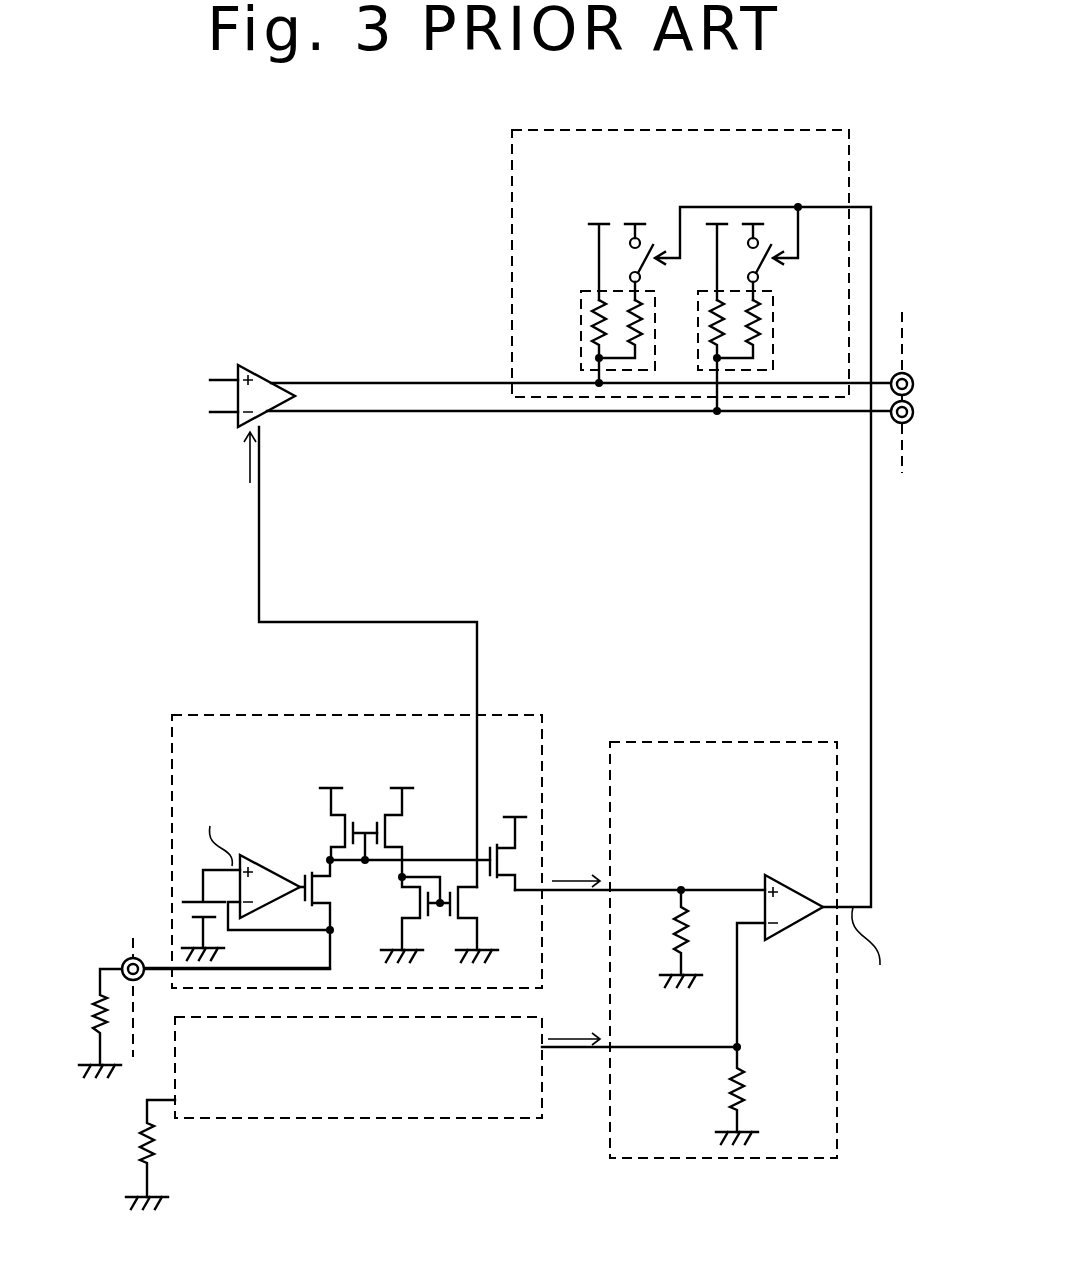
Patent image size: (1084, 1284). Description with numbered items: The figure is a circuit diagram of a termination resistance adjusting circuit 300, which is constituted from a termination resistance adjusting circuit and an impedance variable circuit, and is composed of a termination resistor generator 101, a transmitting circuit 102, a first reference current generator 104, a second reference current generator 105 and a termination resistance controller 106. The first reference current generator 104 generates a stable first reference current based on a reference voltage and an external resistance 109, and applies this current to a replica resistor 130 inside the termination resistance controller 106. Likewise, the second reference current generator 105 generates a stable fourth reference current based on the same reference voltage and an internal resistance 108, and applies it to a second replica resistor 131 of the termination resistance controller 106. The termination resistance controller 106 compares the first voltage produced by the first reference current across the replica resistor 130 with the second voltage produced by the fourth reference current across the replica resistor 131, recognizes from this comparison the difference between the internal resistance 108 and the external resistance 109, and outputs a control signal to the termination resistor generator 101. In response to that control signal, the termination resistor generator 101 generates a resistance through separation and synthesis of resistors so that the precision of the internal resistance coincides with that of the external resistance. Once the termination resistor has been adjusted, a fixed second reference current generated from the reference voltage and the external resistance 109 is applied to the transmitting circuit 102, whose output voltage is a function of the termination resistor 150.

The termination resistance adjusting circuit 300 is at (285, 235).
The termination resistor generator 101 is at (511, 217).
The transmitting circuit 102 is at (263, 366).
The termination resistor 150 is at (754, 371).
The first reference current generator 104 is at (171, 800).
The second reference current generator 105 is at (320, 1119).
The termination resistance controller 106 is at (747, 741).
The external resistance 109 is at (102, 996).
The internal resistance 108 is at (154, 1150).
The replica resistor 130 is at (673, 925).
The replica resistor 131 is at (725, 1088).